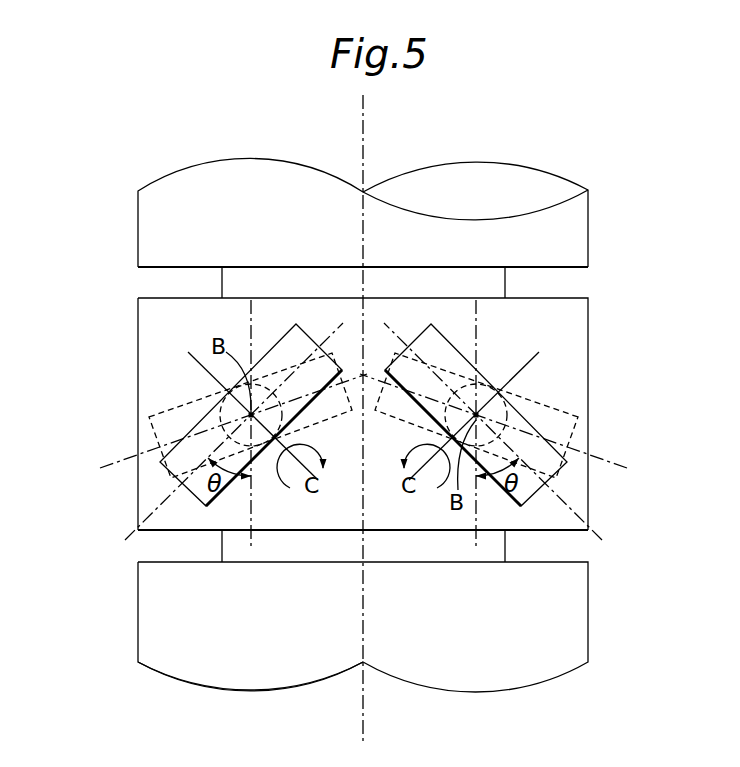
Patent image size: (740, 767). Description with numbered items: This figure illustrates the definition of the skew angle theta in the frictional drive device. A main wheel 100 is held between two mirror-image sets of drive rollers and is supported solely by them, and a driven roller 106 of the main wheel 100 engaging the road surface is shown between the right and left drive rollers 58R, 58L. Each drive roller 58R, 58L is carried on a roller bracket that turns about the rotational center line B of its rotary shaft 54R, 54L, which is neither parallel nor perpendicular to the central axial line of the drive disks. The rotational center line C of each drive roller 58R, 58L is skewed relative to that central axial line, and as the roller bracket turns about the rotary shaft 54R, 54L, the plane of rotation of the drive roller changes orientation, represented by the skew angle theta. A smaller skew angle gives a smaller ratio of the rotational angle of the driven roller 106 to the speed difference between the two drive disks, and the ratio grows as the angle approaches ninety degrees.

The main wheel 100 is at (602, 206).
The driven roller 106 is at (586, 345).
The rotary shaft 54R is at (217, 450).
The rotary shaft 54L is at (497, 436).
The drive roller 58R is at (295, 340).
The drive roller 58L is at (532, 498).